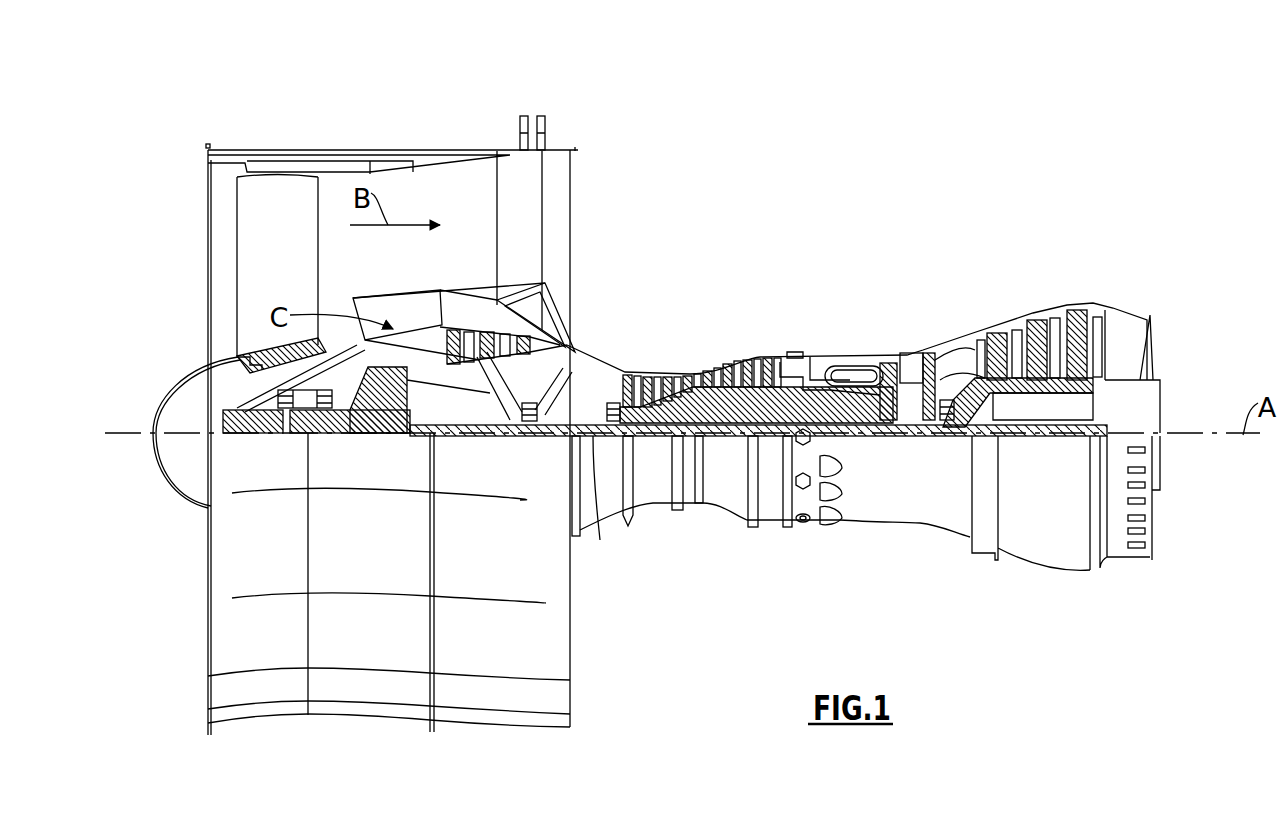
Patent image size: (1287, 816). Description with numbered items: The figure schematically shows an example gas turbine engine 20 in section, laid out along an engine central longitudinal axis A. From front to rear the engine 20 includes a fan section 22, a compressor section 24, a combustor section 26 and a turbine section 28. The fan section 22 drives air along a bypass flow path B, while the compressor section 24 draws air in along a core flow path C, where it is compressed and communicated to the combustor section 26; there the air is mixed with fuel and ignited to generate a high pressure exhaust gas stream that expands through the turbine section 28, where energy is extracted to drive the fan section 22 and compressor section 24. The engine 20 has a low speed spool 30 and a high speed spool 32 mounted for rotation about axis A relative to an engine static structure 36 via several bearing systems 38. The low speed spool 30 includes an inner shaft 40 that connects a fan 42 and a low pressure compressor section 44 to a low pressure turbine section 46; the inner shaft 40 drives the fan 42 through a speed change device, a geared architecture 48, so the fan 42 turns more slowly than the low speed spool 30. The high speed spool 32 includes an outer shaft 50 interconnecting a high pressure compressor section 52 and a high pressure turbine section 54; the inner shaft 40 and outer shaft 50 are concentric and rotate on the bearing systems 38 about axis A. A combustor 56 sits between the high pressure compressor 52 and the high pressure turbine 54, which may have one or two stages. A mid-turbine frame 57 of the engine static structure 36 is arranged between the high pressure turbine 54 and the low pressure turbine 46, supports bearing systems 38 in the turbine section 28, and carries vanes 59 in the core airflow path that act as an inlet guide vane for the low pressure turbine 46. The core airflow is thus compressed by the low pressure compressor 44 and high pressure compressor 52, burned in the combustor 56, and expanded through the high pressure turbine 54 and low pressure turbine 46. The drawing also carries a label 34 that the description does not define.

The gas turbine engine 20 is at (847, 203).
The fan section 22 is at (195, 124).
The compressor section 24 is at (430, 268).
The combustor section 26 is at (878, 268).
The turbine section 28 is at (1107, 268).
The low speed spool 30 is at (727, 440).
The high speed spool 32 is at (767, 400).
The low pressure turbine 34 is at (1053, 392).
The engine static structure 36 is at (768, 524).
The bearing systems 38 is at (288, 437).
The inner shaft 40 is at (593, 447).
The fan 42 is at (262, 279).
The low pressure compressor section 44 is at (547, 292).
The low pressure turbine section 46 is at (1037, 327).
The geared architecture 48 is at (397, 437).
The outer shaft 50 is at (852, 425).
The high pressure compressor section 52 is at (703, 405).
The high pressure turbine section 54 is at (912, 353).
The combustor 56 is at (843, 377).
The mid-turbine frame 57 is at (954, 336).
The vanes 59 is at (988, 407).